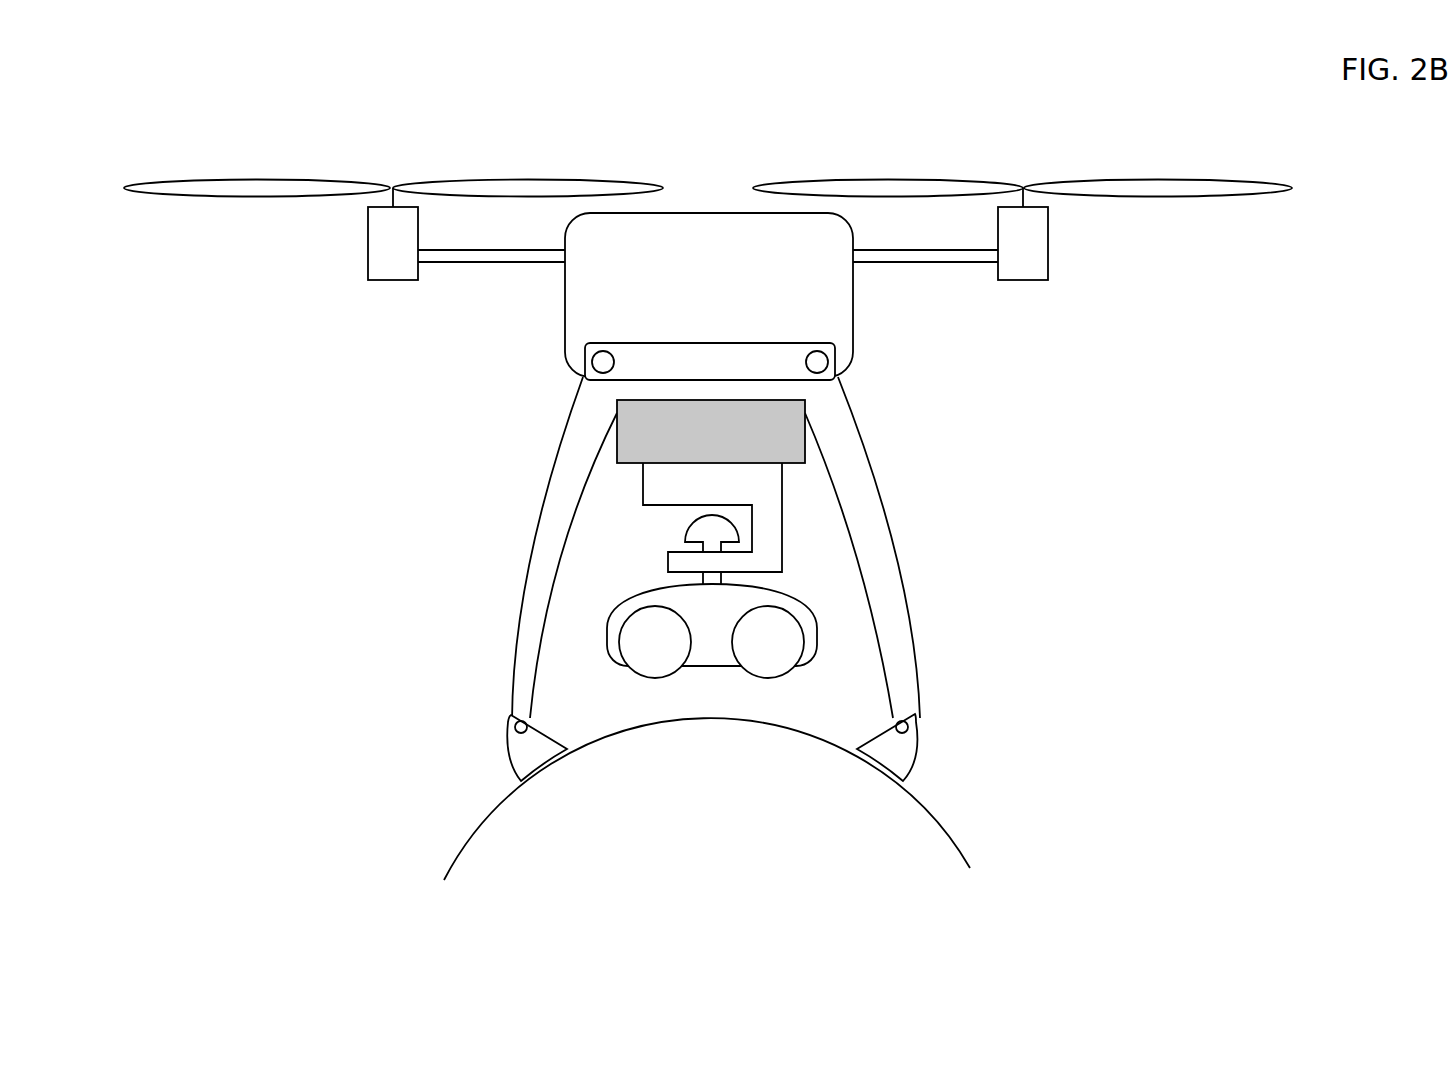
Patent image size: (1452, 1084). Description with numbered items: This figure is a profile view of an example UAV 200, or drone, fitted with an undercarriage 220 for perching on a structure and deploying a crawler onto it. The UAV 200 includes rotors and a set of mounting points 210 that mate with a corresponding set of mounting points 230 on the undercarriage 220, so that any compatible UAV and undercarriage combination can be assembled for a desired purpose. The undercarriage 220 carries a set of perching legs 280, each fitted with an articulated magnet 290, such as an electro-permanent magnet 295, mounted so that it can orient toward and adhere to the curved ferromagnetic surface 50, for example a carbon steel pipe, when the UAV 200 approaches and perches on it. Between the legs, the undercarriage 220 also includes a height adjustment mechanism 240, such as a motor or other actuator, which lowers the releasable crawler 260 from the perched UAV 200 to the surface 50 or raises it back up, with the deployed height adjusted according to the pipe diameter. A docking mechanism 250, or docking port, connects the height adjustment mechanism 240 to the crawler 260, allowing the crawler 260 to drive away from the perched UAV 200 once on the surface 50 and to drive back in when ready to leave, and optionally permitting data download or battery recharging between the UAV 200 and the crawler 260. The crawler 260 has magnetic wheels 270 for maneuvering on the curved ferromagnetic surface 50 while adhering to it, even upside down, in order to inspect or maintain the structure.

The UAV 200 is at (478, 138).
The undercarriage 220 is at (465, 406).
The mounting points 210 is at (817, 362).
The mounting points 230 is at (603, 362).
The height adjustment mechanism 240 is at (660, 438).
The docking mechanism 250 is at (762, 486).
The crawler 260 is at (744, 639).
The magnetic wheels 270 is at (780, 634).
The perching legs 280 is at (545, 578).
The articulated magnet 290 is at (923, 825).
The electro-permanent magnet 295 is at (652, 825).
The curved ferromagnetic surface 50 is at (428, 855).